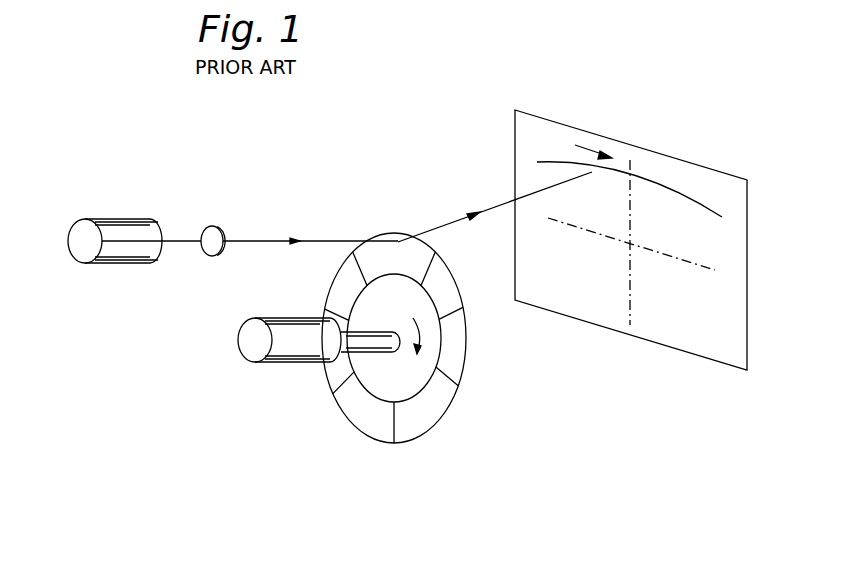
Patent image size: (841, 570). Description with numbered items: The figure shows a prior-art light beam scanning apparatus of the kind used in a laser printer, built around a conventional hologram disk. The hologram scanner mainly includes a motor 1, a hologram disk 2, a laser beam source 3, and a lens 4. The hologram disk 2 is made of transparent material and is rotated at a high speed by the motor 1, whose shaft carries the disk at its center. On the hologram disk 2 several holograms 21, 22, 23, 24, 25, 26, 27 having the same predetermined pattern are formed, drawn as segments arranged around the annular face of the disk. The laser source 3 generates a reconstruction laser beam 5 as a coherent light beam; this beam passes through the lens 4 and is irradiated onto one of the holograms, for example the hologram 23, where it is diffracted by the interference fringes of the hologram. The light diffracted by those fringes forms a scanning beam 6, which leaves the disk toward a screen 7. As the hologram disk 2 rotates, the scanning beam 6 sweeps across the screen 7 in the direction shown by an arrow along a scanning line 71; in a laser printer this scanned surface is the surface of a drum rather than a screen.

The motor 1 is at (247, 366).
The hologram disk 2 is at (342, 416).
The laser beam source 3 is at (126, 258).
The lens 4 is at (218, 228).
The reconstruction laser beam 5 is at (264, 241).
The scanning beam 6 is at (446, 229).
The screen 7 is at (738, 182).
The hologram 21 is at (462, 345).
The hologram 22 is at (448, 286).
The hologram 23 is at (382, 252).
The hologram 24 is at (336, 292).
The hologram 25 is at (336, 377).
The hologram 26 is at (376, 422).
The hologram 27 is at (425, 414).
The scanning line 71 is at (660, 190).